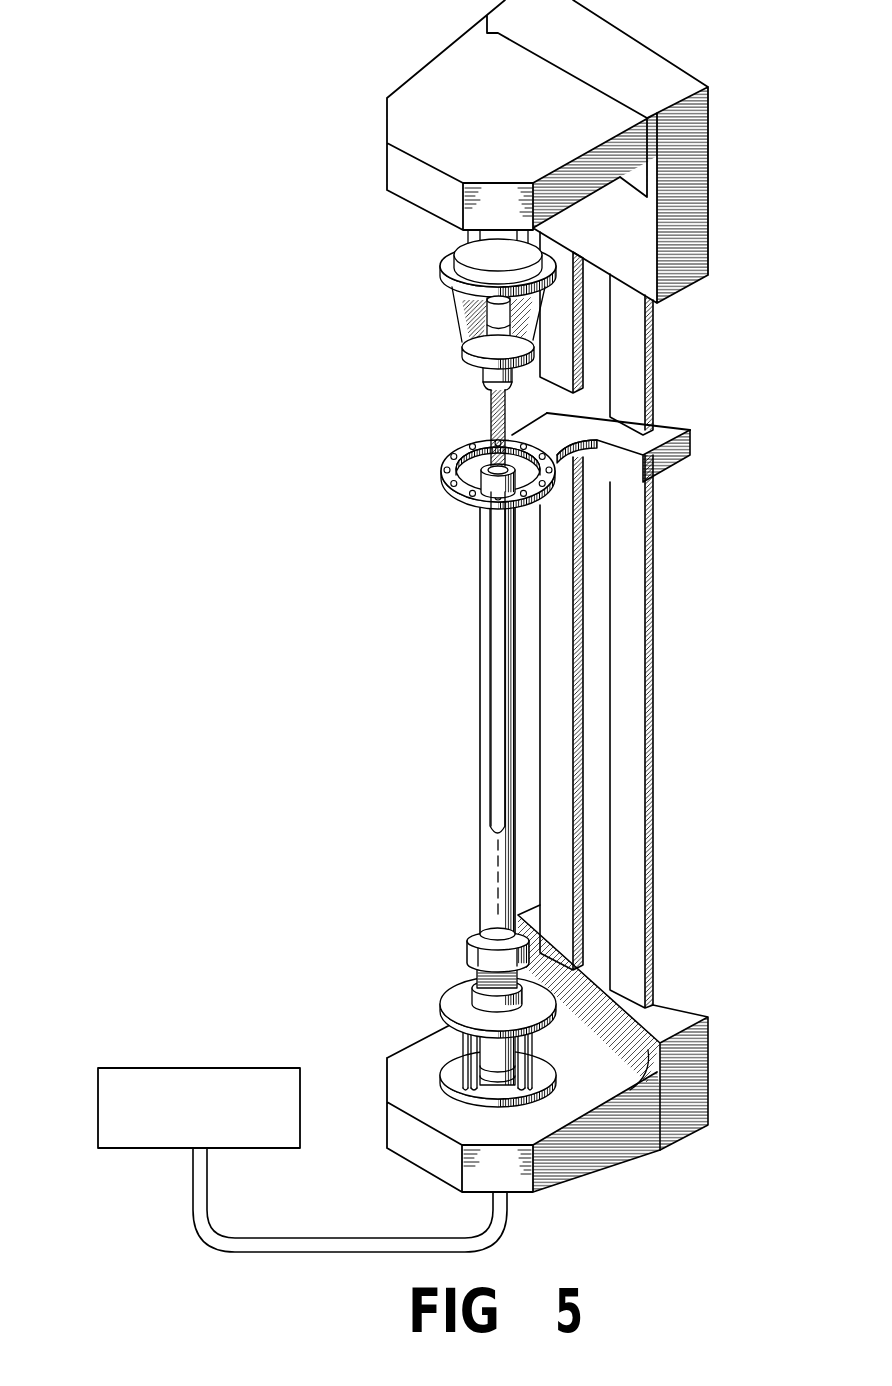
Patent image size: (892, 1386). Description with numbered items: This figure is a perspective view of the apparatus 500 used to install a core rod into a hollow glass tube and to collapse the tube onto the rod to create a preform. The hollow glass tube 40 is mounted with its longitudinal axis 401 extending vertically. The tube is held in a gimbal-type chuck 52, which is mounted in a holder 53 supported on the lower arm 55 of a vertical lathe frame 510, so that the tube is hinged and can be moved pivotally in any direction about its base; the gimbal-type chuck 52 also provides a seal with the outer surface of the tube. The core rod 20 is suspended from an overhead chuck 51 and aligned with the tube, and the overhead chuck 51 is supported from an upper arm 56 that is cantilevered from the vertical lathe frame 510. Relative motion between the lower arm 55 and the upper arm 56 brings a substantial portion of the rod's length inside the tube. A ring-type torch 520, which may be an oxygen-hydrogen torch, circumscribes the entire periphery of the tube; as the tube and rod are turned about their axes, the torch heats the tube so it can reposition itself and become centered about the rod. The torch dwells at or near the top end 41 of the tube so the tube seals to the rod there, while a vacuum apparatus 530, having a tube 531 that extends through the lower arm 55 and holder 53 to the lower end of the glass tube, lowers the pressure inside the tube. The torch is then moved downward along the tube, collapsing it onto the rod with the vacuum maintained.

The apparatus 500 is at (232, 146).
The upper arm 56 is at (422, 92).
The overhead chuck 51 is at (455, 318).
The core rod 20 is at (493, 408).
The top end 41 is at (462, 448).
The ring-type torch 520 is at (445, 479).
The hollow glass tube 40 is at (480, 836).
The longitudinal axis 401 is at (497, 882).
The gimbal-type chuck 52 is at (480, 977).
The holder 53 is at (457, 1053).
The lower arm 55 is at (398, 1080).
The vertical lathe frame 510 is at (677, 1005).
The vacuum apparatus 530 is at (118, 1068).
The tube 531 is at (362, 1238).